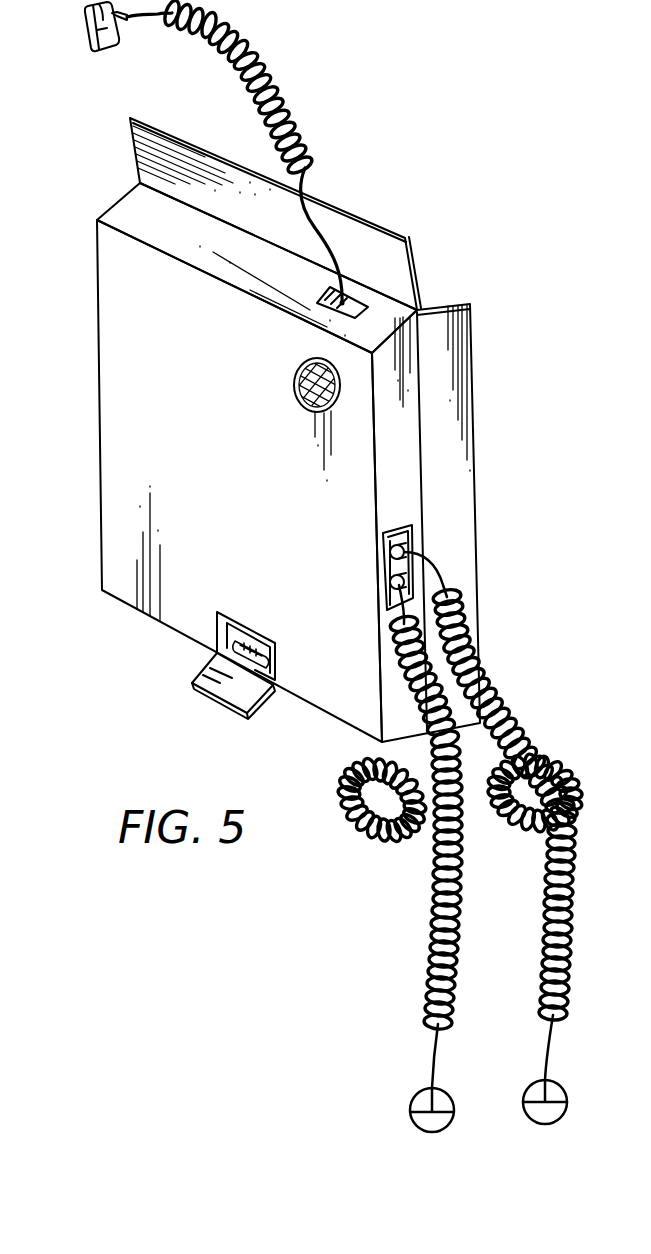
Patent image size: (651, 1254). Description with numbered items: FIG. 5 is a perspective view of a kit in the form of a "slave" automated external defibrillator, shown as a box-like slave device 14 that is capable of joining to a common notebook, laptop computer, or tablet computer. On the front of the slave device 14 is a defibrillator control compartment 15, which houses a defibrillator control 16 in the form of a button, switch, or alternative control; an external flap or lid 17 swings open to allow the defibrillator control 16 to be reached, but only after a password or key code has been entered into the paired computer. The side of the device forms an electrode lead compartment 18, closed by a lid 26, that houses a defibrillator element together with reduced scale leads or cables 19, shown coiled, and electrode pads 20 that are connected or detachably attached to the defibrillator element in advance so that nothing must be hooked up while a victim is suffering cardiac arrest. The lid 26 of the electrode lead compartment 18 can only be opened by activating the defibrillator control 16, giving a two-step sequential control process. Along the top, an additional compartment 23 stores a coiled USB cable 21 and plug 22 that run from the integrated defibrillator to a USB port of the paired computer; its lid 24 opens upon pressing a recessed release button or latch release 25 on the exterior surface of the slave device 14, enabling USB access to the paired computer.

The slave device 14 is at (146, 400).
The defibrillator control compartment 15 is at (221, 653).
The defibrillator control 16 is at (251, 654).
The lid 17 is at (242, 684).
The electrode lead compartment 18 is at (407, 447).
The reduced scale leads or cables 19 is at (543, 888).
The electrode pads 20 is at (524, 1112).
The USB cable 21 is at (280, 80).
The plug 22 is at (88, 33).
The additional compartment 23 is at (182, 244).
The lid 24 is at (405, 236).
The recessed release button or latch release 25 is at (296, 387).
The lid 26 is at (480, 522).